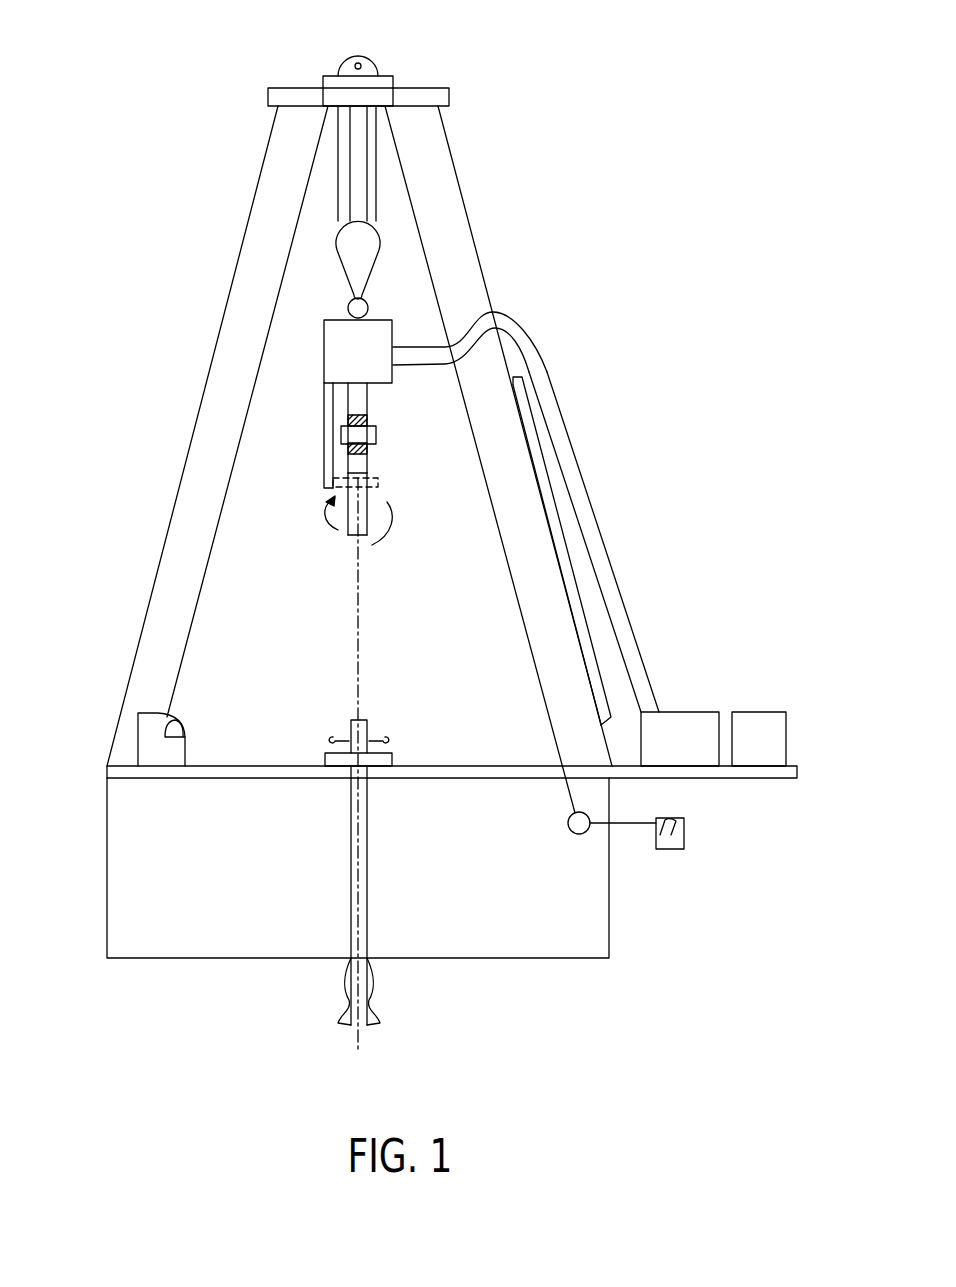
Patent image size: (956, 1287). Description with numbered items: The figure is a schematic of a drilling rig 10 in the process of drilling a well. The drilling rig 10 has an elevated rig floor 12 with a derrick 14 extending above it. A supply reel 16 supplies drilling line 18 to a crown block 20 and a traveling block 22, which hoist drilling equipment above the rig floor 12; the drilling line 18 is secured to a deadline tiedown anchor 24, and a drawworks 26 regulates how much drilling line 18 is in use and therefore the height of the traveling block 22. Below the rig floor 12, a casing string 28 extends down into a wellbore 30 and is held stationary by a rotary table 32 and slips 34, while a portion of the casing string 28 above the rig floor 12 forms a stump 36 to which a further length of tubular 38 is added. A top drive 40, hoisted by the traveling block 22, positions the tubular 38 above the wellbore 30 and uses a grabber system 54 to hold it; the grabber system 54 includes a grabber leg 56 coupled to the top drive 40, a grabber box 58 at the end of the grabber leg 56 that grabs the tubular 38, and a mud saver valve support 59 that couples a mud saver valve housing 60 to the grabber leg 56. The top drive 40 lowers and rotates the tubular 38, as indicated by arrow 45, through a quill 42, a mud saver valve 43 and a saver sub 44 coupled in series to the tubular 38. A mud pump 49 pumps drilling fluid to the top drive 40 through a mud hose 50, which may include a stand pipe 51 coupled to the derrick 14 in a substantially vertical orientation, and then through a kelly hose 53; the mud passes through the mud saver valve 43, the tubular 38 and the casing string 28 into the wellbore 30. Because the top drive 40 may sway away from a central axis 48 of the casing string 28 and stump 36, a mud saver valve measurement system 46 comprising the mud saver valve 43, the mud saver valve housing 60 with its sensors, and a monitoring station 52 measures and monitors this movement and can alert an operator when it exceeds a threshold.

The drilling rig 10 is at (522, 55).
The rig floor 12 is at (230, 780).
The derrick 14 is at (456, 173).
The supply reel 16 is at (672, 850).
The drilling line 18 is at (218, 518).
The crown block 20 is at (357, 56).
The traveling block 22 is at (380, 269).
The deadline tiedown anchor 24 is at (570, 829).
The drawworks 26 is at (183, 733).
The casing string 28 is at (367, 868).
The wellbore 30 is at (378, 1023).
The rotary table 32 is at (323, 753).
The slips 34 is at (375, 741).
The stump 36 is at (366, 714).
The tubular 38 is at (372, 545).
The top drive 40 is at (323, 350).
The quill 42 is at (368, 400).
The mud saver valve 43 is at (367, 424).
The saver sub 44 is at (368, 468).
The arrow 45 is at (340, 531).
The mud saver valve measurement system 46 is at (392, 433).
The central axis 48 is at (359, 626).
The mud pump 49 is at (680, 712).
The mud hose 50 is at (571, 444).
The stand pipe 51 is at (568, 546).
The monitoring station 52 is at (762, 712).
The kelly hose 53 is at (453, 345).
The grabber system 54 is at (301, 424).
The grabber leg 56 is at (325, 388).
The grabber box 58 is at (378, 482).
The mud saver valve support 59 is at (338, 432).
The mud saver valve housing 60 is at (342, 438).